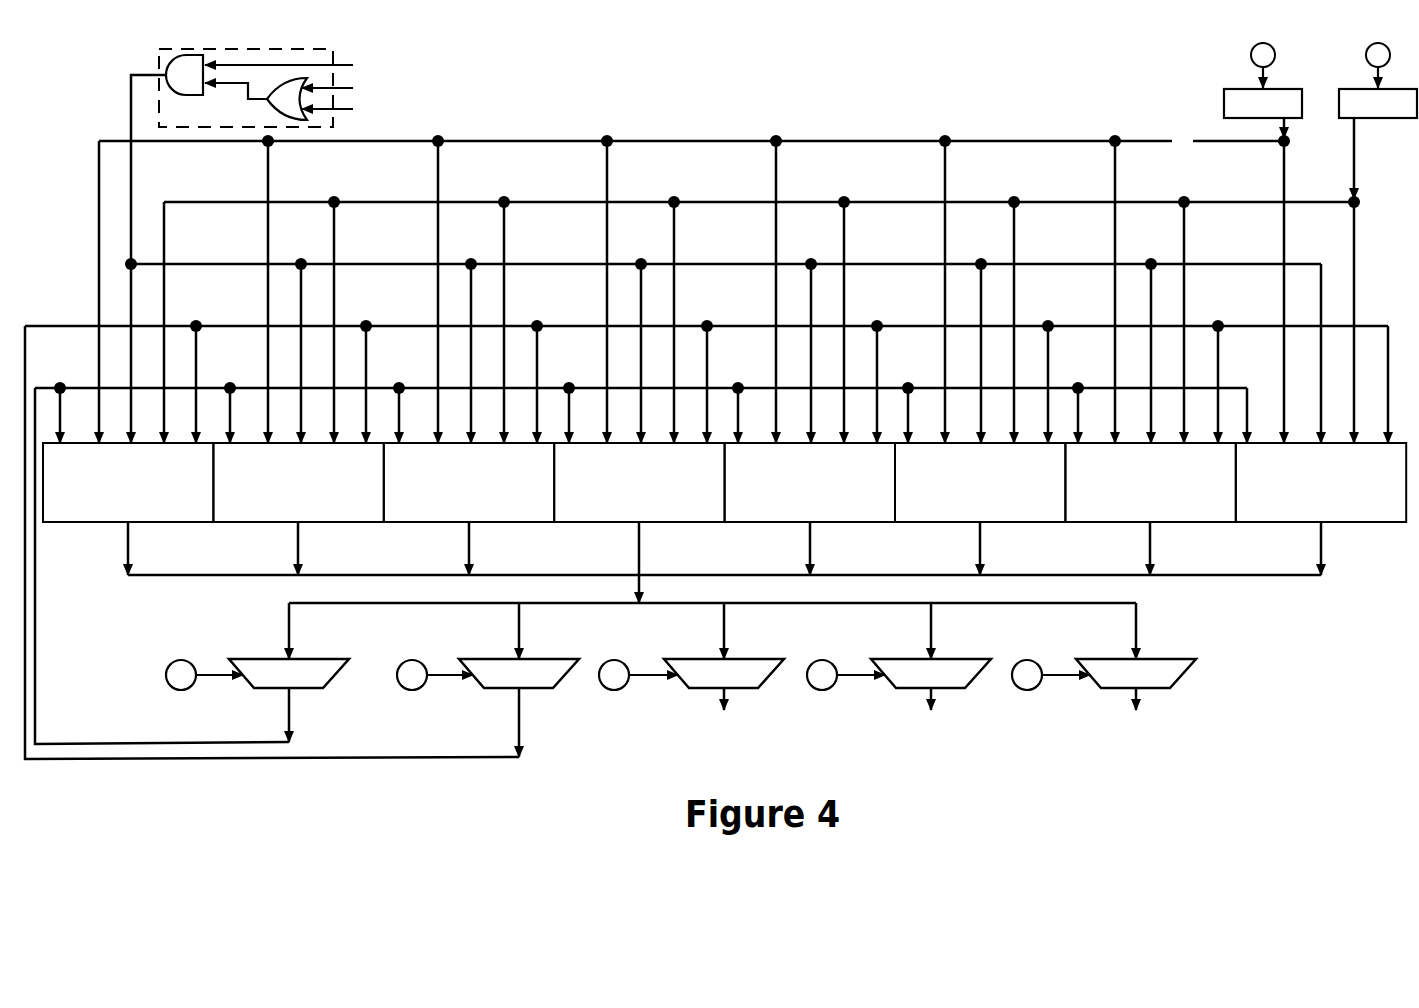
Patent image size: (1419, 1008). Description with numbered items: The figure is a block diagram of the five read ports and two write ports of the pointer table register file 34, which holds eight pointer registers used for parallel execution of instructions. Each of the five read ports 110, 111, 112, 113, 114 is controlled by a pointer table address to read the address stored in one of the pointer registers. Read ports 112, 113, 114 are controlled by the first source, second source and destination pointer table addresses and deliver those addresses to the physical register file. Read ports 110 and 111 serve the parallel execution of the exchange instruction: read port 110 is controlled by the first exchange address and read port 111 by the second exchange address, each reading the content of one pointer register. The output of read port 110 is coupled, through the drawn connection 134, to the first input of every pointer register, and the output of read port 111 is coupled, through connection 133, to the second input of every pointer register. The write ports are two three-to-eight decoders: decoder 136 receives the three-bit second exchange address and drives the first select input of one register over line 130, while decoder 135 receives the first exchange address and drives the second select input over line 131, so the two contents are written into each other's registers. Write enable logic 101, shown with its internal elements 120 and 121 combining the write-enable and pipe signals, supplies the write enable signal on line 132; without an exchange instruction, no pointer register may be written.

The pointer table register file 34 is at (1127, 78).
The write enable logic 101 is at (278, 75).
The read port 110 is at (317, 656).
The read port 111 is at (548, 656).
The read port 112 is at (749, 656).
The read port 113 is at (957, 656).
The read port 114 is at (1162, 656).
The OR gate 120 is at (287, 99).
The AND gate 121 is at (184, 75).
The line 130 is at (1029, 137).
The line 131 is at (1024, 198).
The line 132 is at (1022, 261).
The IN2 bus 133 is at (1020, 323).
The IN1 bus 134 is at (1224, 385).
The decoder 135 is at (1362, 87).
The decoder 136 is at (1276, 87).